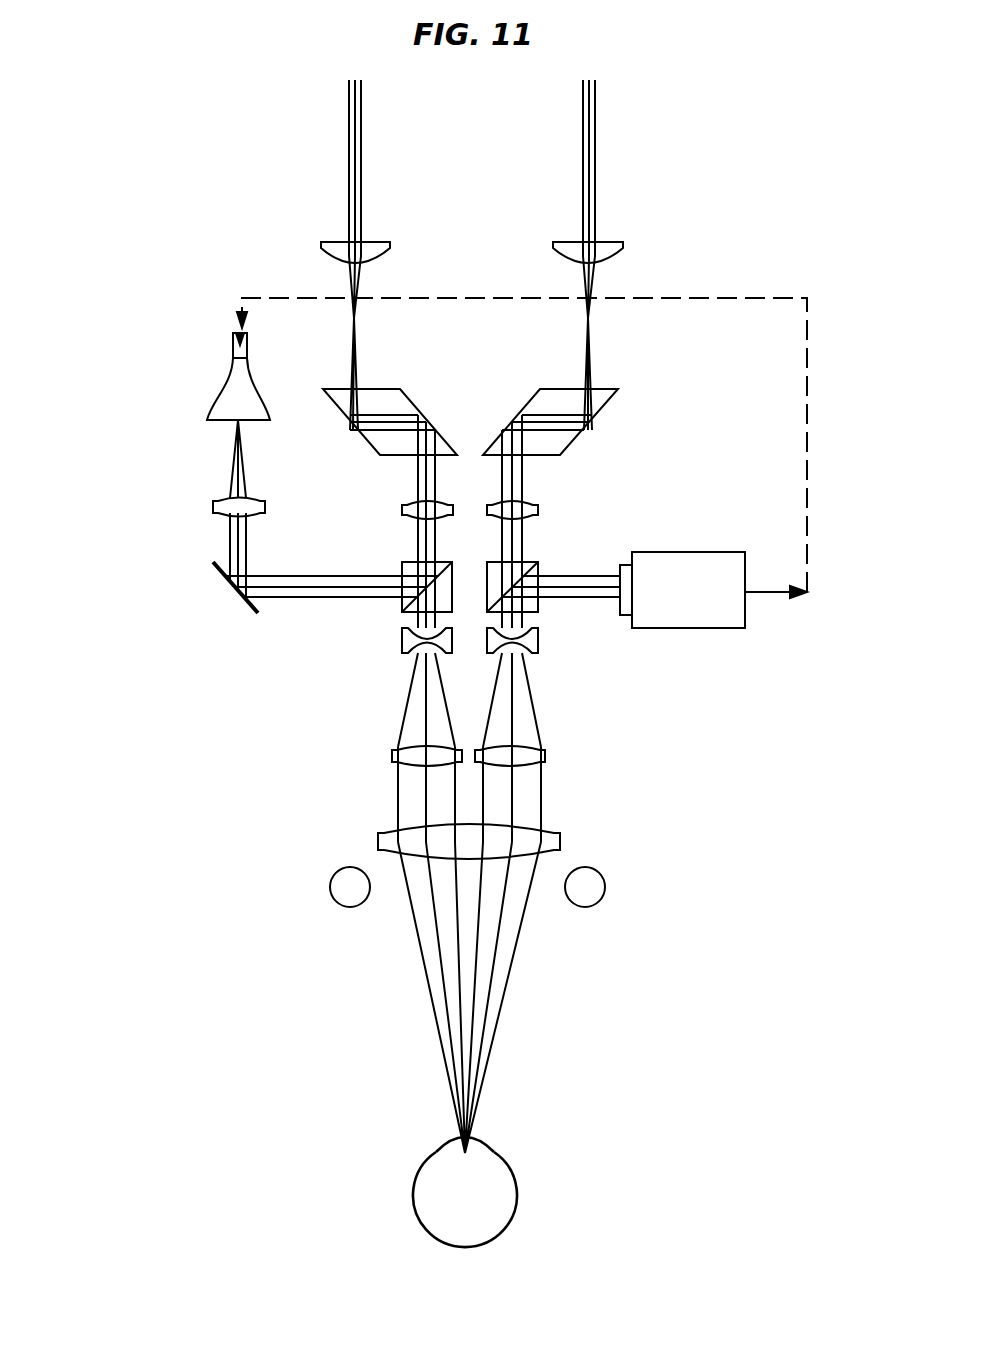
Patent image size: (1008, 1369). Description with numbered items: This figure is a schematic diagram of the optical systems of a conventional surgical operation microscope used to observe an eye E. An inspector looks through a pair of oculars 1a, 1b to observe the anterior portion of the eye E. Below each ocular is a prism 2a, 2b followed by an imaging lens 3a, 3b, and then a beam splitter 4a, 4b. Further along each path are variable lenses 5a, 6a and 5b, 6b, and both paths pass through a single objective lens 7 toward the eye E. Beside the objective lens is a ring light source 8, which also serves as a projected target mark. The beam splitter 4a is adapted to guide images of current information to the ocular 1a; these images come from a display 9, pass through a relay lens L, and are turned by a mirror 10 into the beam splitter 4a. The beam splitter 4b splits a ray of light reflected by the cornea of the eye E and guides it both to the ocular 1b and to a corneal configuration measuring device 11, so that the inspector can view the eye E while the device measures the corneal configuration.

The ocular 1a is at (378, 242).
The ocular 1b is at (610, 242).
The prism 2a is at (372, 389).
The prism 2b is at (606, 389).
The imaging lens 3a is at (408, 503).
The imaging lens 3b is at (534, 503).
The beam splitter 4a is at (406, 562).
The beam splitter 4b is at (536, 562).
The variable lens 5a is at (408, 652).
The variable lens 5b is at (535, 652).
The variable lens 6a is at (396, 747).
The variable lens 6b is at (543, 747).
The objective lens 7 is at (549, 830).
The ring light source 8 is at (350, 867).
The display 9 is at (214, 405).
The mirror 10 is at (234, 590).
The corneal configuration measuring device 11 is at (678, 552).
The relay lens L is at (258, 501).
The eye E is at (499, 1166).